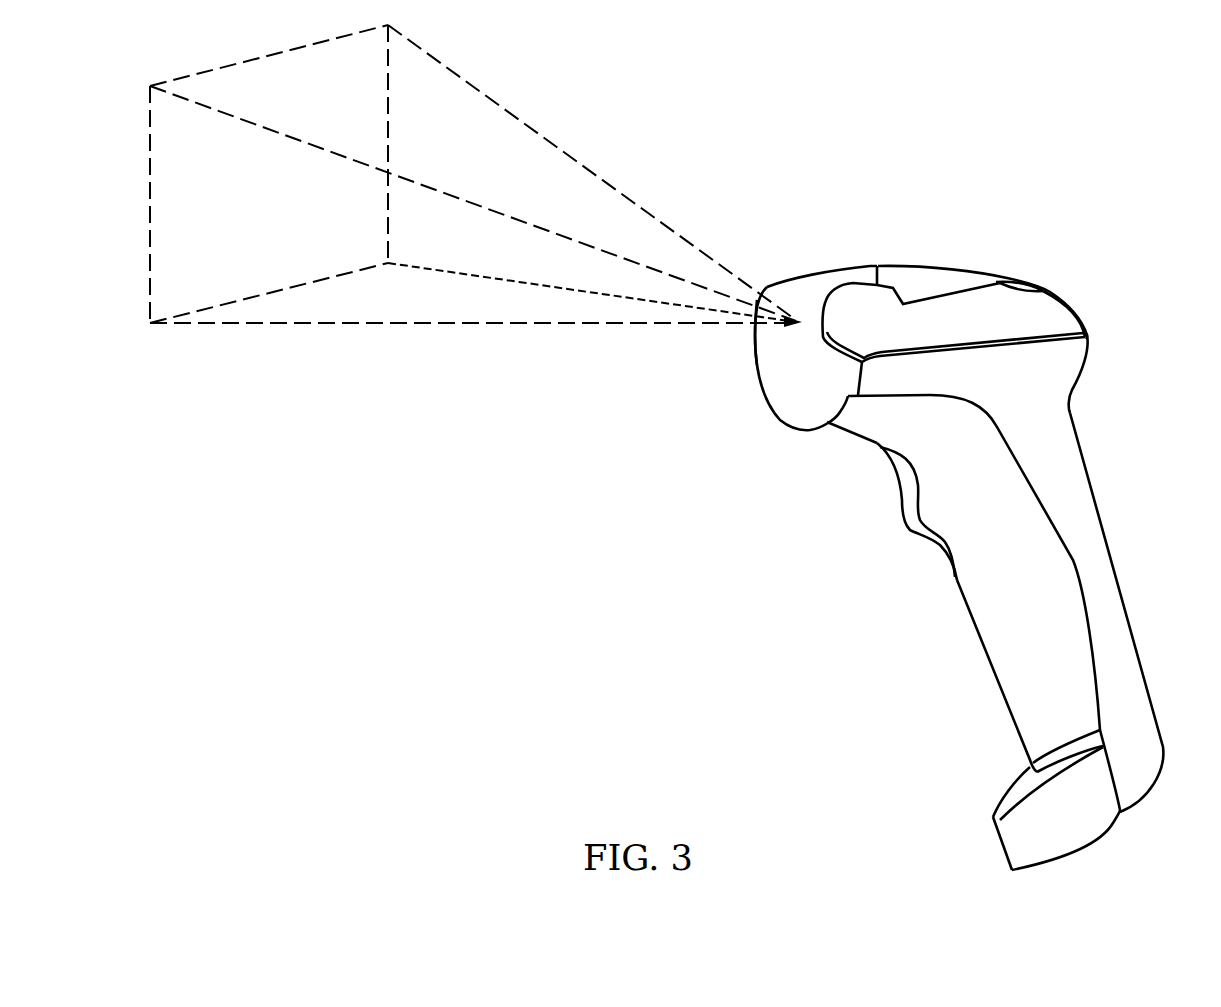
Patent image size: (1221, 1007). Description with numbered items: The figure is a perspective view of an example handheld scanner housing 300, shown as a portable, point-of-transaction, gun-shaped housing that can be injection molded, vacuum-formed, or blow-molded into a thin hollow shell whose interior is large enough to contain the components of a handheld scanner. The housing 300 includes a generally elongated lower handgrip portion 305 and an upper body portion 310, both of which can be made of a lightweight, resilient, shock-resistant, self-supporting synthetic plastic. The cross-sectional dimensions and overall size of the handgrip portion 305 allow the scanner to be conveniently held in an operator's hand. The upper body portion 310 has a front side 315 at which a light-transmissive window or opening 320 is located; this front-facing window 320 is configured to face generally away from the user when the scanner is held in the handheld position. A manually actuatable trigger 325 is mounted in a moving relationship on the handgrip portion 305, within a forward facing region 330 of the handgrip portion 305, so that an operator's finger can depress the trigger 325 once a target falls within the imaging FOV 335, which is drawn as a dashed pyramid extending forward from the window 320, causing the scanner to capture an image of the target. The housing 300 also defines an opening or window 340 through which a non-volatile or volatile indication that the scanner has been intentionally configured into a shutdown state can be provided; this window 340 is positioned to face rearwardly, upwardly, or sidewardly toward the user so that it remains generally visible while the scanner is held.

The handheld scanner housing 300 is at (1096, 157).
The lower handgrip portion 305 is at (1112, 557).
The upper body portion 310 is at (1067, 308).
The front side 315 is at (711, 446).
The light-transmissive window 320 is at (757, 372).
The trigger 325 is at (902, 515).
The forward facing region 330 is at (871, 603).
The imaging FOV 335 is at (463, 83).
The shutdown state indication window 340 is at (1028, 285).